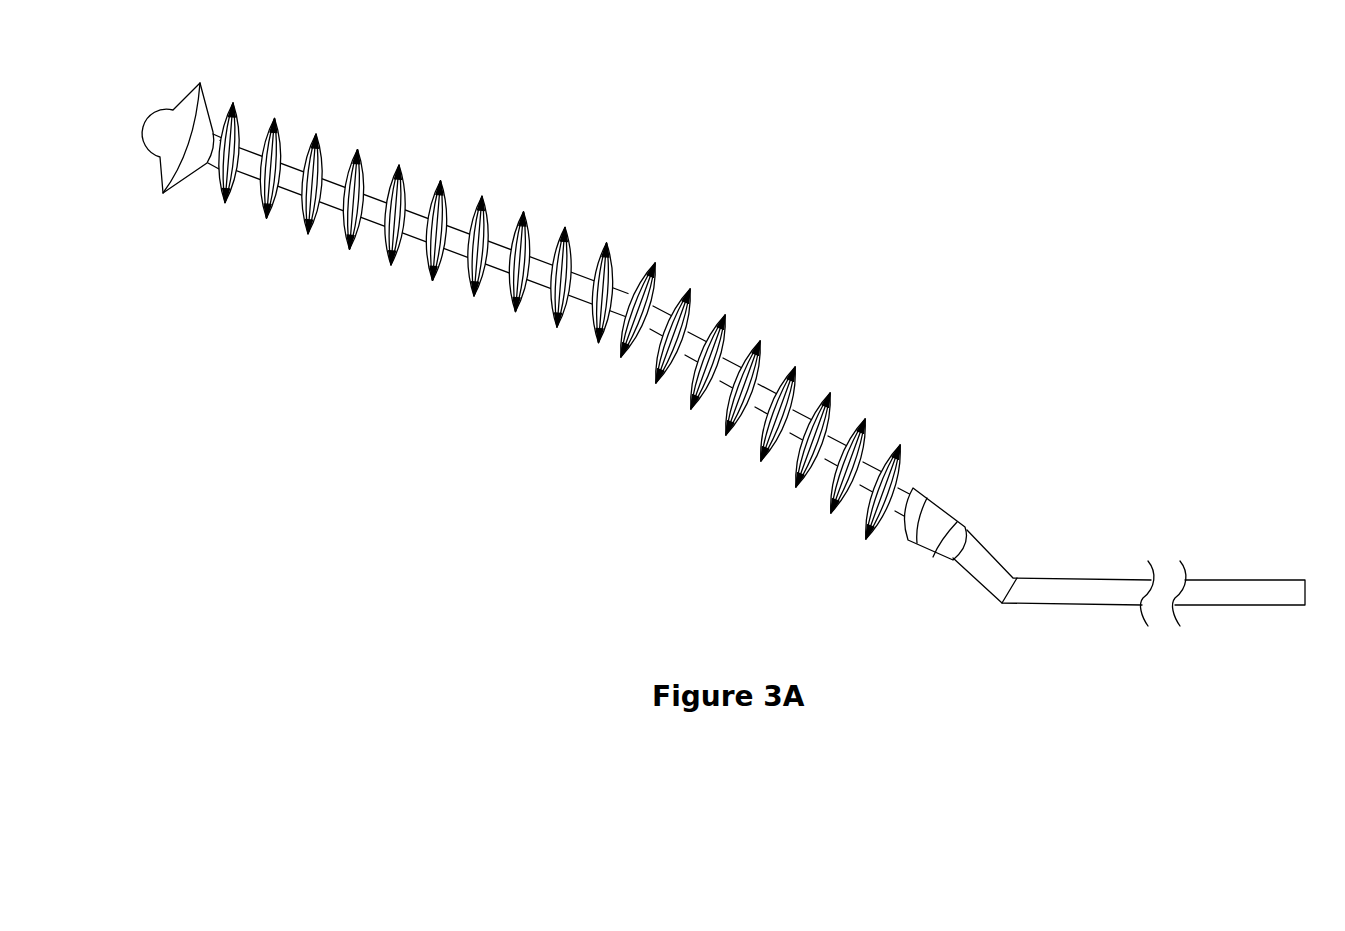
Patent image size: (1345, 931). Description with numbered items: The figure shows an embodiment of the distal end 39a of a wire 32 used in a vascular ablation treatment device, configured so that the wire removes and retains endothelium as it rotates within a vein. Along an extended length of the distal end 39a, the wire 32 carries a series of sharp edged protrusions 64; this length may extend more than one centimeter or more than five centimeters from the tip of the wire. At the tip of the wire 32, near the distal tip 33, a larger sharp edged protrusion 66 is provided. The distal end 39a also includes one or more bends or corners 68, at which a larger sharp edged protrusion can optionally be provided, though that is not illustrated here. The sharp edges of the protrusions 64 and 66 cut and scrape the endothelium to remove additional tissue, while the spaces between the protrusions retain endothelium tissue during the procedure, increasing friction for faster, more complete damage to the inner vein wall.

The distal tip 33 is at (134, 128).
The larger sharp edged protrusion 66 is at (185, 97).
The distal end 39a is at (1055, 532).
The sharp edged protrusions 64 is at (448, 202).
The bends or corners 68 is at (633, 273).
The wire 32 is at (988, 553).